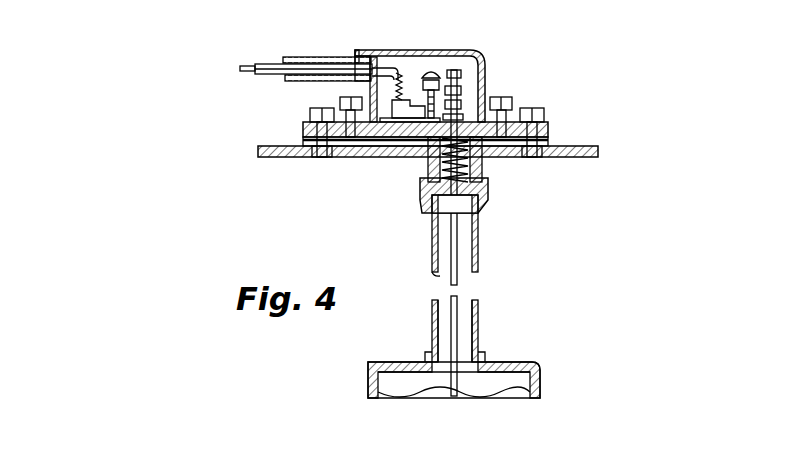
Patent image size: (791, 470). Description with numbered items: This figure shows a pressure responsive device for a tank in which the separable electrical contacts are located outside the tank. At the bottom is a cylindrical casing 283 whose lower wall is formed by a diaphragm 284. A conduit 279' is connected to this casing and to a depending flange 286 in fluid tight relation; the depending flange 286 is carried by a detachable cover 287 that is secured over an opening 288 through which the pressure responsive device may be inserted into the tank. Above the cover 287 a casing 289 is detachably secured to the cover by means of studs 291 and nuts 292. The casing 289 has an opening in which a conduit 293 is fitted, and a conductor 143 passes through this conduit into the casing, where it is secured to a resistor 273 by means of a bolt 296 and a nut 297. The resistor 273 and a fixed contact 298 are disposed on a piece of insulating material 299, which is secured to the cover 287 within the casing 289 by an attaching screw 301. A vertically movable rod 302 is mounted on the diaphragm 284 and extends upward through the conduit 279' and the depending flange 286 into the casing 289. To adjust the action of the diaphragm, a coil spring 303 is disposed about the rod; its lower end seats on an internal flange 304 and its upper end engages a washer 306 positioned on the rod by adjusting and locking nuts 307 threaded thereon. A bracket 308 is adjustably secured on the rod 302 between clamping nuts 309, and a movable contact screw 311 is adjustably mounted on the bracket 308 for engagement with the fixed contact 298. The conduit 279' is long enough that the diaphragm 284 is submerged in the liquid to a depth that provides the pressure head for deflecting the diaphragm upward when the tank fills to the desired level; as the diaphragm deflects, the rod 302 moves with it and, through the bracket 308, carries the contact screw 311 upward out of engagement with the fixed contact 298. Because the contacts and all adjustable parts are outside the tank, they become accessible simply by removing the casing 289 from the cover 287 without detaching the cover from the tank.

The conductor 143 is at (262, 70).
The conduit 293 is at (326, 58).
The bolt 296 is at (358, 52).
The nut 297 is at (372, 80).
The resistor 273 is at (400, 80).
The attaching screw 301 is at (408, 115).
The movable contact screw 311 is at (426, 75).
The bracket 308 is at (436, 72).
The casing 289 is at (478, 53).
The clamping nuts 309 is at (462, 88).
The adjusting and locking nuts 307 is at (462, 102).
The washer 306 is at (462, 117).
The studs 291 is at (343, 103).
The nuts 292 is at (345, 108).
The cover 287 is at (305, 128).
The insulating material 299 is at (398, 140).
The opening 288 is at (350, 158).
The fixed contact 298 is at (422, 134).
The internal flange 304 is at (484, 171).
The coil spring 303 is at (435, 168).
The depending flange 286 is at (486, 211).
The conduit 279' is at (491, 233).
The vertically movable rod 302 is at (458, 333).
The cylindrical casing 283 is at (540, 374).
The diaphragm 284 is at (494, 397).